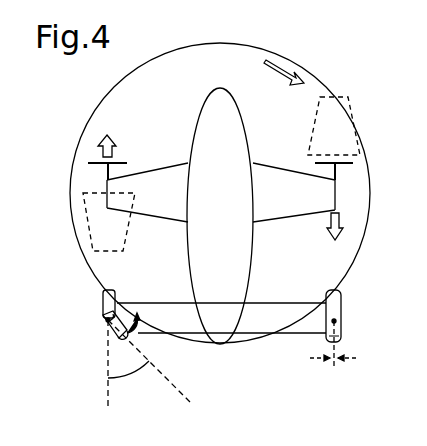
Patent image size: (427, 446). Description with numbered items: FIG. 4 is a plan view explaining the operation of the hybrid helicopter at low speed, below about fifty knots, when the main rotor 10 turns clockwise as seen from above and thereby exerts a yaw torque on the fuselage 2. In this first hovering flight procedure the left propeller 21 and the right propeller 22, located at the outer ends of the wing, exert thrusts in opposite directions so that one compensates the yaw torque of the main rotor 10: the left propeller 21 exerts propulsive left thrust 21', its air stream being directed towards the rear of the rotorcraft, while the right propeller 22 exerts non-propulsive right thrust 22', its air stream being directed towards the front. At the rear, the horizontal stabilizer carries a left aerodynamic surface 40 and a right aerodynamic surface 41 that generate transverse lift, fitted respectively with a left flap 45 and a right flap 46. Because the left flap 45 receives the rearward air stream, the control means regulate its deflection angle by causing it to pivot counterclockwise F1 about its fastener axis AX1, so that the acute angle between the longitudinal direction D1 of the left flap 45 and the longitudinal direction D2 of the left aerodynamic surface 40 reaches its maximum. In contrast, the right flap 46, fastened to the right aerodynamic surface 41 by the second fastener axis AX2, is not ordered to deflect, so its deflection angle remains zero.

The main rotor 10 is at (200, 43).
The fuselage 2 is at (227, 151).
The left propeller 21 is at (120, 151).
The propulsive left thrust 21' is at (72, 135).
The right propeller 22 is at (359, 184).
The non-propulsive right thrust 22' is at (314, 232).
The left aerodynamic surface 40 is at (103, 298).
The left flap 45 is at (122, 303).
The fastener axis AX1 is at (104, 320).
The counterclockwise pivoting F1 is at (126, 342).
The longitudinal direction of the left aerodynamic surface D2 is at (108, 386).
The longitudinal direction of the left flap D1 is at (172, 386).
The right aerodynamic surface 41 is at (342, 298).
The second fastener axis AX2 is at (340, 321).
The right flap 46 is at (342, 340).